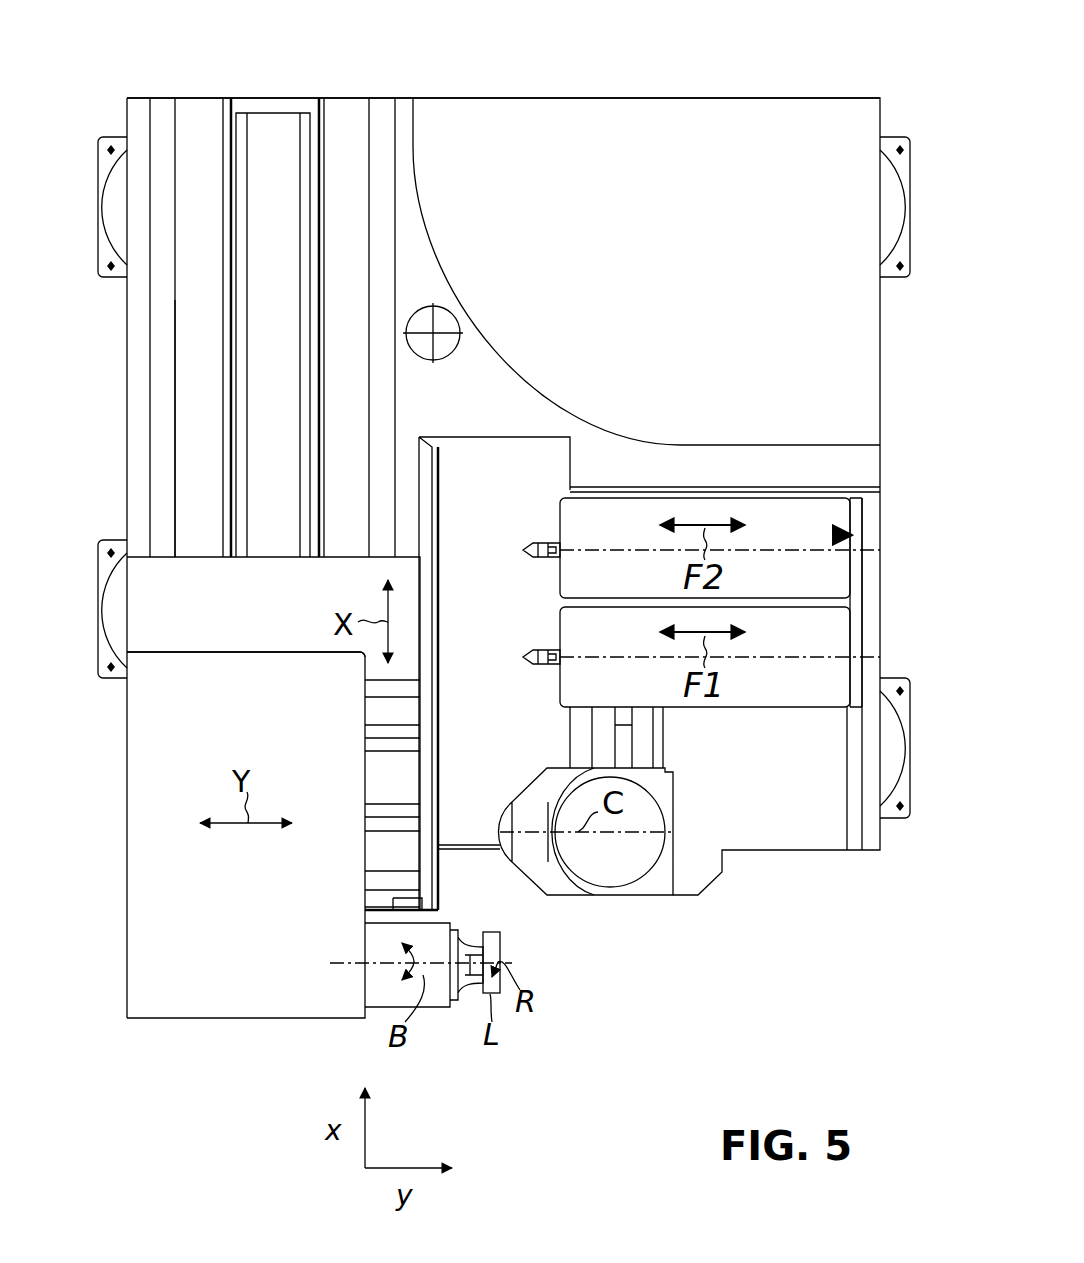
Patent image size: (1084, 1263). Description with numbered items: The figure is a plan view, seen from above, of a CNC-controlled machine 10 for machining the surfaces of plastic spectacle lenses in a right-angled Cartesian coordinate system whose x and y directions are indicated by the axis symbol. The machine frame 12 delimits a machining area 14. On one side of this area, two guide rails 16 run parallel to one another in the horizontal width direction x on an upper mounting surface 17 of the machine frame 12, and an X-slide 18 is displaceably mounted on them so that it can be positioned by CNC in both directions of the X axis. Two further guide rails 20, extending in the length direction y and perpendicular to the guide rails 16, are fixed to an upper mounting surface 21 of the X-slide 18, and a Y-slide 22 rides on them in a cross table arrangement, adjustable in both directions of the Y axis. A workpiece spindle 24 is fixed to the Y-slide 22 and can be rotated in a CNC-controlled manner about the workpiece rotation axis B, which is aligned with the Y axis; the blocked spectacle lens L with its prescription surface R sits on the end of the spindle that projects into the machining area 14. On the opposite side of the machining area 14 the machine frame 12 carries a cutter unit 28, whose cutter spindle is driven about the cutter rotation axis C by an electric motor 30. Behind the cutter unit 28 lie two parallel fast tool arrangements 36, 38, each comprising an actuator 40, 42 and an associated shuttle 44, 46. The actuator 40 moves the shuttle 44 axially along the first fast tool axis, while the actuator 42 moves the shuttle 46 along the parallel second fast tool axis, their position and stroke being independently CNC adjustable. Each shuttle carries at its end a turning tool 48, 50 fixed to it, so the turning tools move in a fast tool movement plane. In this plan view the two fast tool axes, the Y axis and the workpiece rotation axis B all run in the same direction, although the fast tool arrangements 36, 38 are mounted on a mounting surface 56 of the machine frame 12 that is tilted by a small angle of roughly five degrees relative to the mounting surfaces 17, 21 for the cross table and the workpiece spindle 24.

The machine 10 is at (690, 70).
The machine frame 12 is at (810, 191).
The machining area 14 is at (492, 872).
The guide rails 16 is at (377, 110).
The upper mounting surface 17 is at (198, 372).
The X-slide 18 is at (250, 621).
The guide rails 20 is at (377, 690).
The upper mounting surface 21 is at (160, 630).
The Y-slide 22 is at (202, 725).
The workpiece spindle 24 is at (365, 978).
The cutter unit 28 is at (632, 876).
The electric motor 30 is at (650, 816).
The first fast tool arrangement 36 is at (872, 666).
The second fast tool arrangement 38 is at (858, 537).
The actuator 40 is at (833, 640).
The actuator 42 is at (840, 522).
The shuttle 44 is at (562, 648).
The shuttle 46 is at (562, 540).
The turning tool 48 is at (521, 656).
The turning tool 50 is at (521, 549).
The mounting surface 56 is at (870, 578).